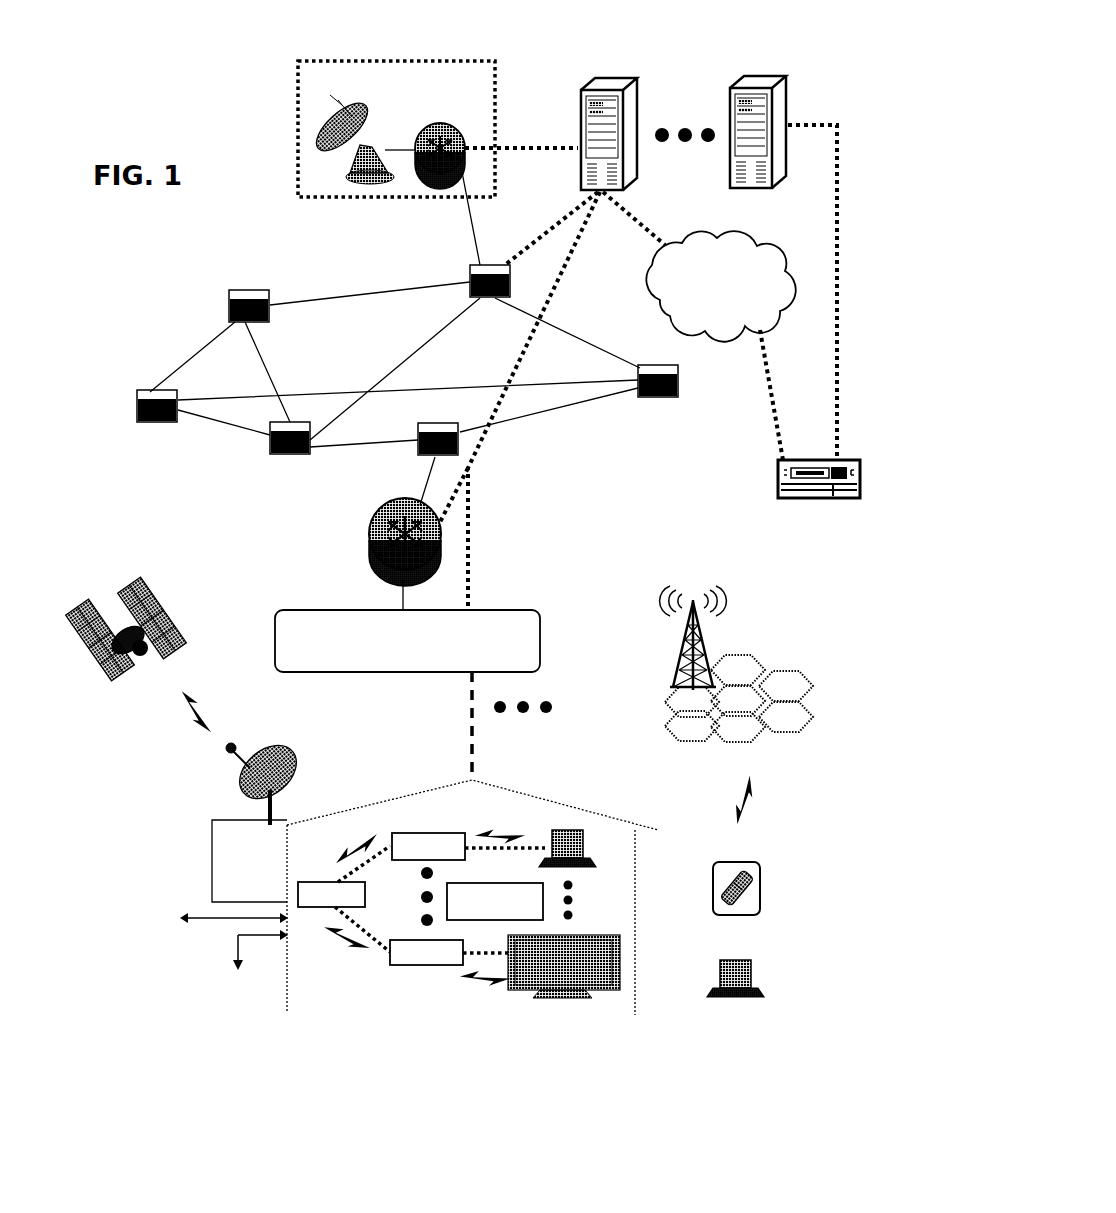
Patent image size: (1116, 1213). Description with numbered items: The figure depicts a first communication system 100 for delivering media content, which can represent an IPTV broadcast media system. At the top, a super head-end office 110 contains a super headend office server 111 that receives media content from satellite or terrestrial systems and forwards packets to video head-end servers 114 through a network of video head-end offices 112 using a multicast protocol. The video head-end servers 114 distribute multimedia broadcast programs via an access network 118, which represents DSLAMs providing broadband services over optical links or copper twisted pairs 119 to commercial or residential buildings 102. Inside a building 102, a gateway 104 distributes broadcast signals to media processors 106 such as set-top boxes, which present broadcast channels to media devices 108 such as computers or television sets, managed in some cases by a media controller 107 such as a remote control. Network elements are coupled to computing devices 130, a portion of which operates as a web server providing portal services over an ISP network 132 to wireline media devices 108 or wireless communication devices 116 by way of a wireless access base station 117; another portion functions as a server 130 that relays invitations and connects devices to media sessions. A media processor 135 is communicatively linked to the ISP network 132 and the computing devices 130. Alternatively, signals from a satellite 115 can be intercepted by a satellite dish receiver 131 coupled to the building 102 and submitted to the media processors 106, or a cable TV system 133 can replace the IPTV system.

The communication system 100 is at (148, 149).
The buildings 102 is at (472, 908).
The gateway 104 is at (331, 894).
The media processors 106 is at (433, 899).
The media controller 107 is at (510, 901).
The media devices 108 is at (573, 830).
The super head-end office 110 is at (298, 137).
The super headend office server 111 is at (422, 128).
The network of video head-end offices 112 is at (137, 408).
The video head-end servers 114 is at (368, 542).
The satellite 115 is at (87, 638).
The wireless communication devices 116 is at (762, 875).
The wireless access base station 117 is at (740, 658).
The access network 118 is at (540, 635).
The optical links or copper twisted pairs 119 is at (468, 753).
The computing devices 130 is at (760, 82).
The satellite dish receiver 131 is at (198, 818).
The ISP network 132 is at (702, 324).
The cable TV system 133 is at (238, 980).
The media processor 135 is at (766, 498).